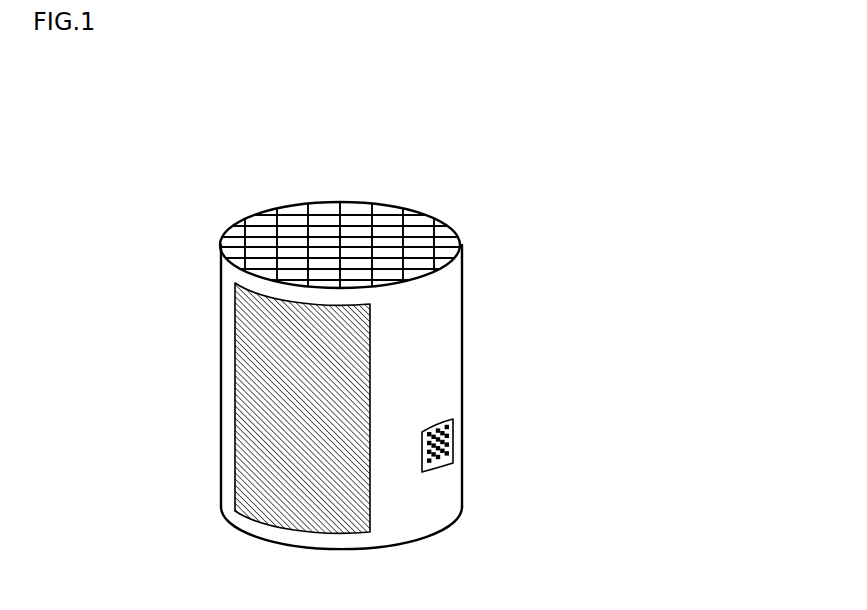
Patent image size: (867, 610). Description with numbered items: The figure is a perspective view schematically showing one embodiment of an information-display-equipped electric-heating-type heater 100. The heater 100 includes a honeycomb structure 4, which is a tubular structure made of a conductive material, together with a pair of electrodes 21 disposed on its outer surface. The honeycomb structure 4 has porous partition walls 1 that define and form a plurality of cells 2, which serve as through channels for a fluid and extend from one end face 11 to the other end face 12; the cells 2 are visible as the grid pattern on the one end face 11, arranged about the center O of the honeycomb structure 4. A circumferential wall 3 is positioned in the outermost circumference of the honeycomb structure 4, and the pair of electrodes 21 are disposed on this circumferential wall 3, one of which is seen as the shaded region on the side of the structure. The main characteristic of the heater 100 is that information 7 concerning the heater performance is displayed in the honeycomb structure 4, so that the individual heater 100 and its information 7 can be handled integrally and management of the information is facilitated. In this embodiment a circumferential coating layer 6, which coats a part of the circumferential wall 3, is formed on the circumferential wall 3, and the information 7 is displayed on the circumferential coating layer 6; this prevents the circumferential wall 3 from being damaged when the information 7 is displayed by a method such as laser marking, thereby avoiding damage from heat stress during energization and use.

The information-display-equipped electric-heating-type heater 100 is at (656, 90).
The partition wall 1 is at (331, 234).
The one end face 11 is at (232, 232).
The cell 2 is at (257, 218).
The center of honeycomb structure O is at (342, 243).
The circumferential wall 3 is at (437, 413).
The honeycomb structure 4 is at (466, 282).
The the other end face 12 is at (452, 527).
The electrode 21 is at (373, 498).
The circumferential coating layer 6 is at (452, 429).
The information concerning heater performance 7 is at (450, 449).